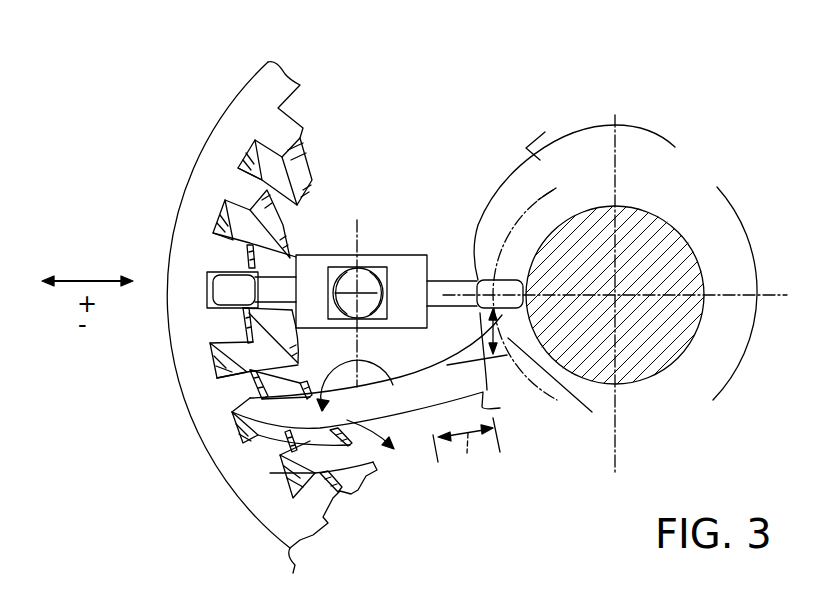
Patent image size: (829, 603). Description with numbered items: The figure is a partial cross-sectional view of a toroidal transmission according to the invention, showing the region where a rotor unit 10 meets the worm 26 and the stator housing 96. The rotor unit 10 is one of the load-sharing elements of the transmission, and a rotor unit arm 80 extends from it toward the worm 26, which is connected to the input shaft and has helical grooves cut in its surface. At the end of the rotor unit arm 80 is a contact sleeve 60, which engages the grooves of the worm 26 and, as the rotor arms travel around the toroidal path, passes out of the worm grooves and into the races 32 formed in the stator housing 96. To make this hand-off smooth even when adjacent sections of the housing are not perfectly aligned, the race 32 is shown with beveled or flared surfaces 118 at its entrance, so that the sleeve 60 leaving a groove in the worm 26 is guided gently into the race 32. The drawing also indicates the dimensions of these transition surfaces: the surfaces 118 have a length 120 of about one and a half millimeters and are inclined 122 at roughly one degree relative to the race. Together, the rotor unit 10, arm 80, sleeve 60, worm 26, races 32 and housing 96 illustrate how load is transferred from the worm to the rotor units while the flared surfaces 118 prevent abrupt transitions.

The stator housing 96 is at (307, 52).
The race 32 is at (295, 118).
The contact sleeve 60 is at (218, 275).
The rotor unit arm 80 is at (298, 252).
The rotor unit 10 is at (400, 254).
The worm 26 is at (668, 347).
The beveled or flared surfaces 118 is at (486, 368).
The length 120 is at (466, 451).
The inclination 122 is at (560, 393).